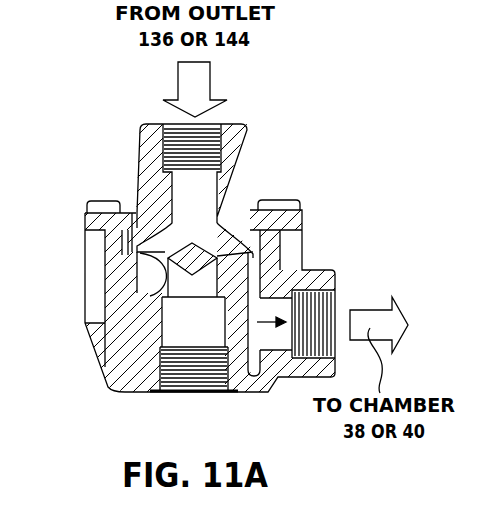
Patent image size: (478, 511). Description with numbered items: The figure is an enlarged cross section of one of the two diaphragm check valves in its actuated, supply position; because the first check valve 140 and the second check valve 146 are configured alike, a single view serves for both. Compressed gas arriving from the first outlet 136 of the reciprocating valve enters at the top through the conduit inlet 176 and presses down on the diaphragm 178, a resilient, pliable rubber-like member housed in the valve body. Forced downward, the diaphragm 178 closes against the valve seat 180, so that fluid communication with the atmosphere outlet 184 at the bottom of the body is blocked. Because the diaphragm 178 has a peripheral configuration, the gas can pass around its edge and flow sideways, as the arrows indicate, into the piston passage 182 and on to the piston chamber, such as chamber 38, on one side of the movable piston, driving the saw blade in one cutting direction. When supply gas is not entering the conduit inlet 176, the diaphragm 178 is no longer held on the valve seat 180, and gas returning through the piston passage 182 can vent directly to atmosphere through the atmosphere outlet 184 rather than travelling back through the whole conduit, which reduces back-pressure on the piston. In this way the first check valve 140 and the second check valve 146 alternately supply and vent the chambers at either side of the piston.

The first check valve 140 is at (113, 115).
The second check valve 146 is at (113, 115).
The conduit inlet 176 is at (212, 145).
The diaphragm 178 is at (242, 262).
The valve seat 180 is at (157, 296).
The piston passage 182 is at (335, 312).
The atmosphere outlet 184 is at (173, 383).
The first outlet 136 is at (195, 89).
The chamber 38 is at (379, 345).